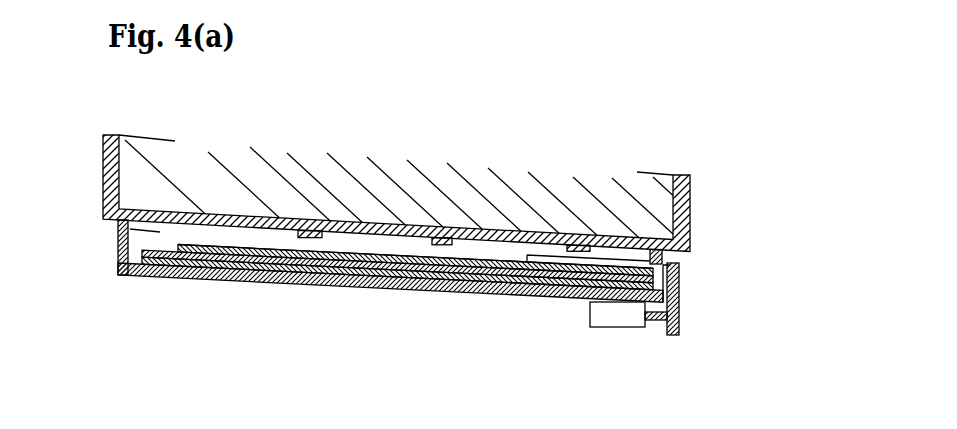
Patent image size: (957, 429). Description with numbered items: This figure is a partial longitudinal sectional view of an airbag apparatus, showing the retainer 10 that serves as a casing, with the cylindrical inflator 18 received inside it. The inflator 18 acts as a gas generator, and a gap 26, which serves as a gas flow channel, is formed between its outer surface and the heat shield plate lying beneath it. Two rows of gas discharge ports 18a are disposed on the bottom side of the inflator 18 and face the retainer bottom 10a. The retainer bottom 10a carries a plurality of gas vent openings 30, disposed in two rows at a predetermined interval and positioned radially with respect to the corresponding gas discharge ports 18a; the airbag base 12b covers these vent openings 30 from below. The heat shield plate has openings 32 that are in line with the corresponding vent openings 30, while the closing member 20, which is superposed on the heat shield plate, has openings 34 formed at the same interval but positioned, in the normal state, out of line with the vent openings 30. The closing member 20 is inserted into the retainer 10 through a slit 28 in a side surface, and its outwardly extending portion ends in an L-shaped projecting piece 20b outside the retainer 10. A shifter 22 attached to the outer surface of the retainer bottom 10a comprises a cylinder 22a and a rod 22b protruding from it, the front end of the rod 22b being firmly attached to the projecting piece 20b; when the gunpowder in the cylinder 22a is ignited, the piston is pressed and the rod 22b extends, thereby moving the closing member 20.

The retainer 10 is at (116, 257).
The retainer bottom 10a is at (162, 279).
The airbag base 12b is at (237, 284).
The inflator 18 is at (690, 193).
The gas discharge ports 18a is at (304, 216).
The closing member 20 is at (212, 243).
The projecting piece 20b is at (680, 305).
The shifter 22 is at (600, 365).
The cylinder 22a is at (607, 329).
The rod 22b is at (652, 330).
The gap 26 is at (118, 233).
The slit 28 is at (665, 258).
The gas vent openings 30 is at (302, 286).
The openings 32 is at (450, 224).
The openings 34 is at (265, 247).